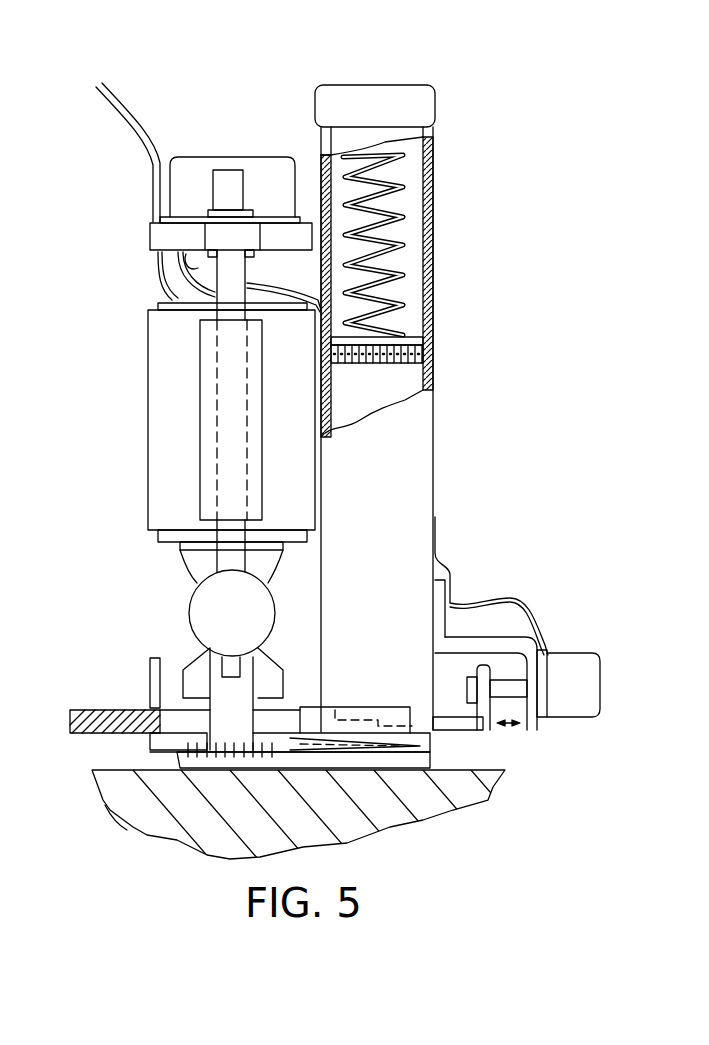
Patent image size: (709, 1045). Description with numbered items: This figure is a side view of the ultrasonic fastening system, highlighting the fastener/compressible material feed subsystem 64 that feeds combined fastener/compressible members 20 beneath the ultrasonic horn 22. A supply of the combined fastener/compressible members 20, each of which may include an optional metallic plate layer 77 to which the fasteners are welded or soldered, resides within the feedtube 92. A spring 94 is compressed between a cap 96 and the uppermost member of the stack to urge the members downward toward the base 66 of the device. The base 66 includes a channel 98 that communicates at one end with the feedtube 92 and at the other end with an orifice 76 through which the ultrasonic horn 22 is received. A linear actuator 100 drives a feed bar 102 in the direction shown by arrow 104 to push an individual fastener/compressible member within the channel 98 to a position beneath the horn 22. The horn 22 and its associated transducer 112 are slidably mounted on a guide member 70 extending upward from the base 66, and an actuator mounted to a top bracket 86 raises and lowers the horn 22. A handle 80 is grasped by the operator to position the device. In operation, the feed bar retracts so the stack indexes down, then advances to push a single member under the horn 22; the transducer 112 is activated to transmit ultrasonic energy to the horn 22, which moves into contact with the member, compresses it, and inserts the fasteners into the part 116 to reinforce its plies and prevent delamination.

The cap 96 is at (437, 105).
The feedtube 92 is at (432, 187).
The spring 94 is at (400, 245).
The metallic plate layer 77 is at (415, 338).
The fastener/compressible member 20 is at (425, 350).
The fastener/compressible material feed subsystem 64 is at (452, 478).
The top bracket 86 is at (150, 240).
The guide member 70 is at (240, 276).
The transducer 112 is at (148, 432).
The handle 80 is at (190, 605).
The ultrasonic horn 22 is at (280, 688).
The orifice 76 is at (167, 708).
The base 66 is at (112, 707).
The feed bar 102 is at (455, 733).
The part 116 is at (178, 763).
The channel 98 is at (325, 722).
The linear actuator 100 is at (595, 718).
The arrow 104 is at (508, 726).